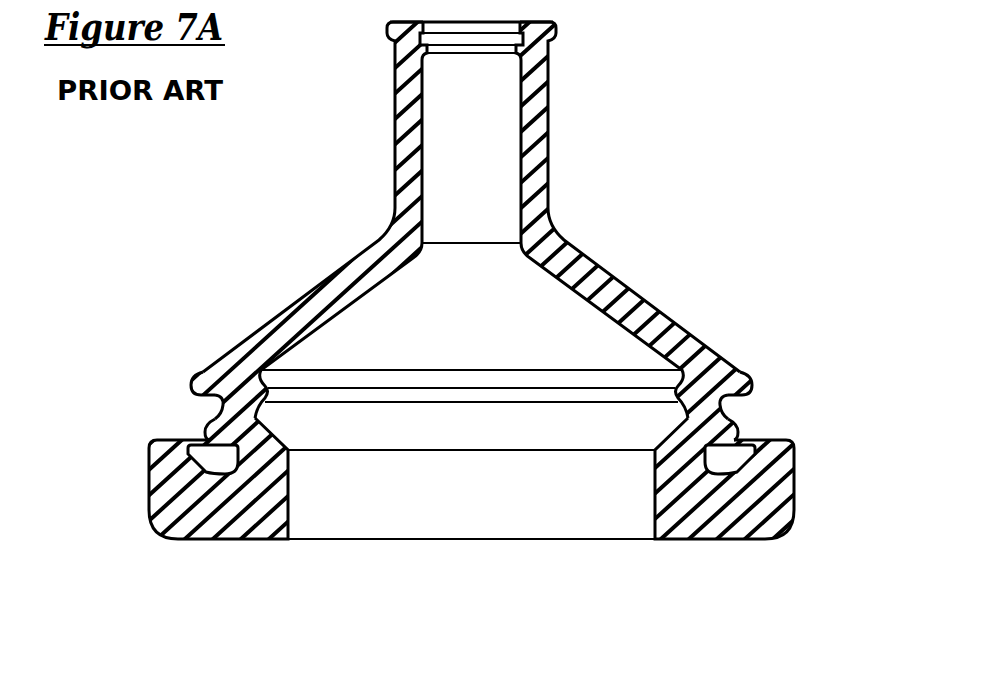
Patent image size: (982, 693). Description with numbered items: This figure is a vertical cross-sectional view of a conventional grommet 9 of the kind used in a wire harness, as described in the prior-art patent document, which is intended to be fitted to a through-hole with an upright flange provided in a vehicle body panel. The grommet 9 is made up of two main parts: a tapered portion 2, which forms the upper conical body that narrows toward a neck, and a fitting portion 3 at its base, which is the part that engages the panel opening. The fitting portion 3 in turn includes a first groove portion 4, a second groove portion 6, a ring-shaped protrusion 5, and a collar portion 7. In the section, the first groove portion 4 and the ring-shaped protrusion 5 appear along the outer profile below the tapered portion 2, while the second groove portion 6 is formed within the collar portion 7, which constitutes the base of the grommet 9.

The grommet 9 is at (648, 121).
The tapered portion 2 is at (652, 290).
The fitting portion 3 is at (760, 411).
The first groove portion 4 is at (729, 402).
The ring-shaped protrusion 5 is at (754, 429).
The second groove portion 6 is at (730, 465).
The collar portion 7 is at (773, 508).